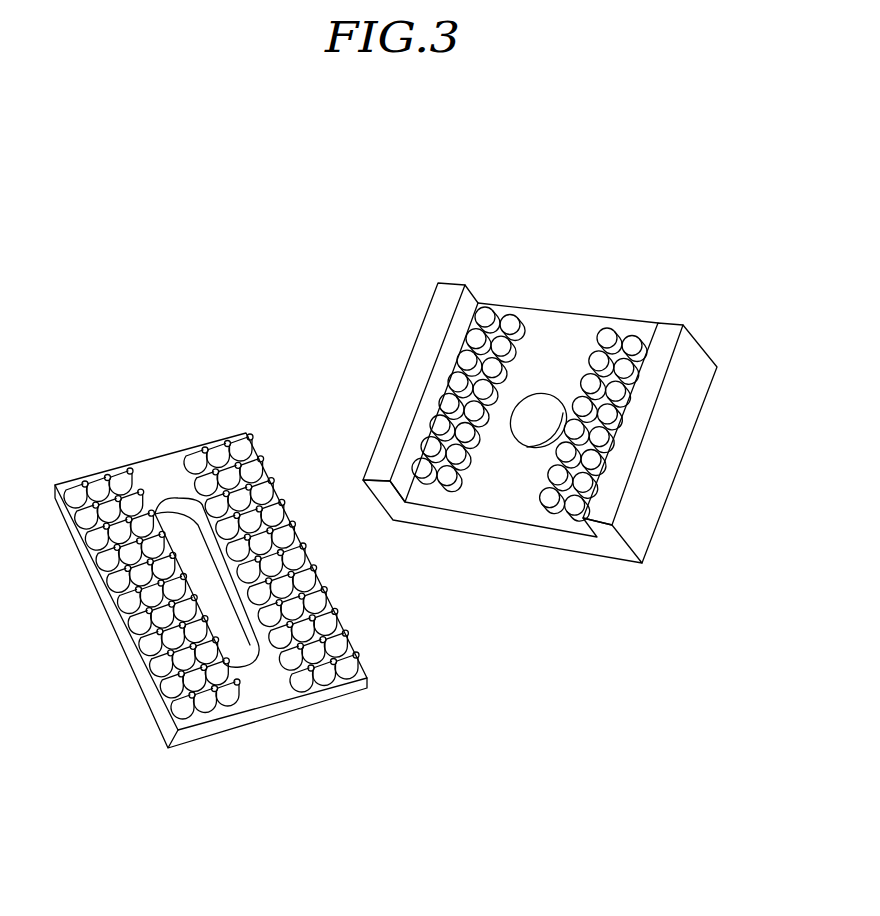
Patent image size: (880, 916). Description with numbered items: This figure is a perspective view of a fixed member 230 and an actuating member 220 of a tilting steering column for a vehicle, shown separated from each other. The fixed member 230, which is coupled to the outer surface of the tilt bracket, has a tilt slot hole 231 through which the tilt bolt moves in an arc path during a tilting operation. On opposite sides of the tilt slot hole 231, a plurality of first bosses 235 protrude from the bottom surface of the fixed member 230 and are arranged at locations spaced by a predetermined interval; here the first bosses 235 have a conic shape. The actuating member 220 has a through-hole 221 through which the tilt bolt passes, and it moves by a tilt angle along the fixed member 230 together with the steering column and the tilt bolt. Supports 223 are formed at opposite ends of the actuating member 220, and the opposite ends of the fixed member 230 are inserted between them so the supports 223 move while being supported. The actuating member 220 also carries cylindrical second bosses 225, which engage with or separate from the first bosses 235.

The actuating member 220 is at (549, 390).
The through-hole 221 is at (520, 427).
The supports 223 is at (447, 302).
The second bosses 225 is at (555, 510).
The fixed member 230 is at (211, 558).
The tilt slot hole 231 is at (263, 642).
The first bosses 235 is at (183, 708).